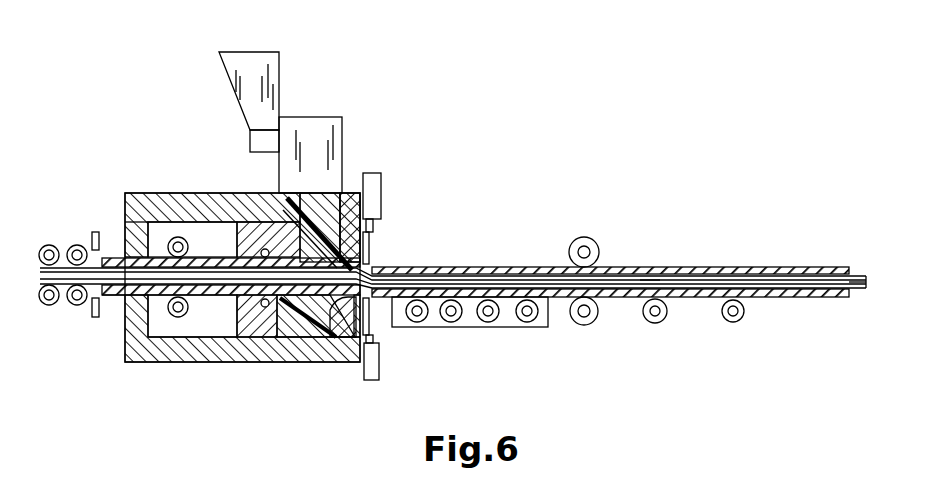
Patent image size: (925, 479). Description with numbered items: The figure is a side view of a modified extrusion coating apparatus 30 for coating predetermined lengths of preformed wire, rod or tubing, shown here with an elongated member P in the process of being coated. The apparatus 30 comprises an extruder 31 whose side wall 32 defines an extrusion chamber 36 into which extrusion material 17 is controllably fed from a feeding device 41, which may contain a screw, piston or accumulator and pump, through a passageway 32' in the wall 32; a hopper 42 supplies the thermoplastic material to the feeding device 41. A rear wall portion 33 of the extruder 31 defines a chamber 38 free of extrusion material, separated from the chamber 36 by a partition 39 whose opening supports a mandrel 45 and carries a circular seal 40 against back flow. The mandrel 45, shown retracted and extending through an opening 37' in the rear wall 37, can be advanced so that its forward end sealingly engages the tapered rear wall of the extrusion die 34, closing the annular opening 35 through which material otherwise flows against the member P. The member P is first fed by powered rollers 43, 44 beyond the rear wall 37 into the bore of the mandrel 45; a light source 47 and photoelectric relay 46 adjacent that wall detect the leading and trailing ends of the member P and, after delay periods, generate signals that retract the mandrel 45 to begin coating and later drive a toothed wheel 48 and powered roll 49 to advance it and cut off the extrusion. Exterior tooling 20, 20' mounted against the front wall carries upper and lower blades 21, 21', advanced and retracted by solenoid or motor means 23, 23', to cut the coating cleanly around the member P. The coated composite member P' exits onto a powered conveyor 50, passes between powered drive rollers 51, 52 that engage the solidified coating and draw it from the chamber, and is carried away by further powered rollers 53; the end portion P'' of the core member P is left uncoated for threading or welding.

The extrusion coating apparatus 30 is at (113, 57).
The extruder 31 is at (135, 193).
The rear wall portion 33 is at (197, 193).
The rear wall 37 is at (121, 209).
The opening in rear wall 37' is at (230, 348).
The toothed wheel 48 is at (192, 243).
The powered roll 49 is at (189, 308).
The chamber 38 is at (226, 337).
The partition 39 is at (240, 355).
The extrusion die 34 is at (345, 192).
The passageway 32' is at (296, 212).
The circular seal 40 is at (296, 362).
The extrusion chamber 36 is at (340, 362).
The side wall 32 is at (361, 356).
The hopper 42 is at (232, 84).
The feeding device 41 is at (340, 130).
The exterior tooling 20 is at (396, 184).
The solenoid or motor means 23 is at (401, 203).
The upper blade 21 is at (400, 233).
The lower blade 21' is at (397, 331).
The solenoid or motor means 23' is at (391, 379).
The exterior tooling 20' is at (395, 371).
The annular opening 35 is at (364, 266).
The elongated member P is at (444, 264).
The extrusion material 17 is at (439, 266).
The powered roller 43 is at (53, 246).
The light source 47 is at (92, 240).
The powered roller 44 is at (60, 306).
The photoelectric relay 46 is at (96, 318).
The mandrel 45 is at (124, 297).
The powered conveyor 50 is at (475, 328).
The powered drive roller 51 is at (592, 251).
The powered drive roller 52 is at (586, 325).
The powered rollers 53 is at (658, 323).
The coated strip section P' is at (670, 256).
The end portion of core member P'' is at (866, 256).